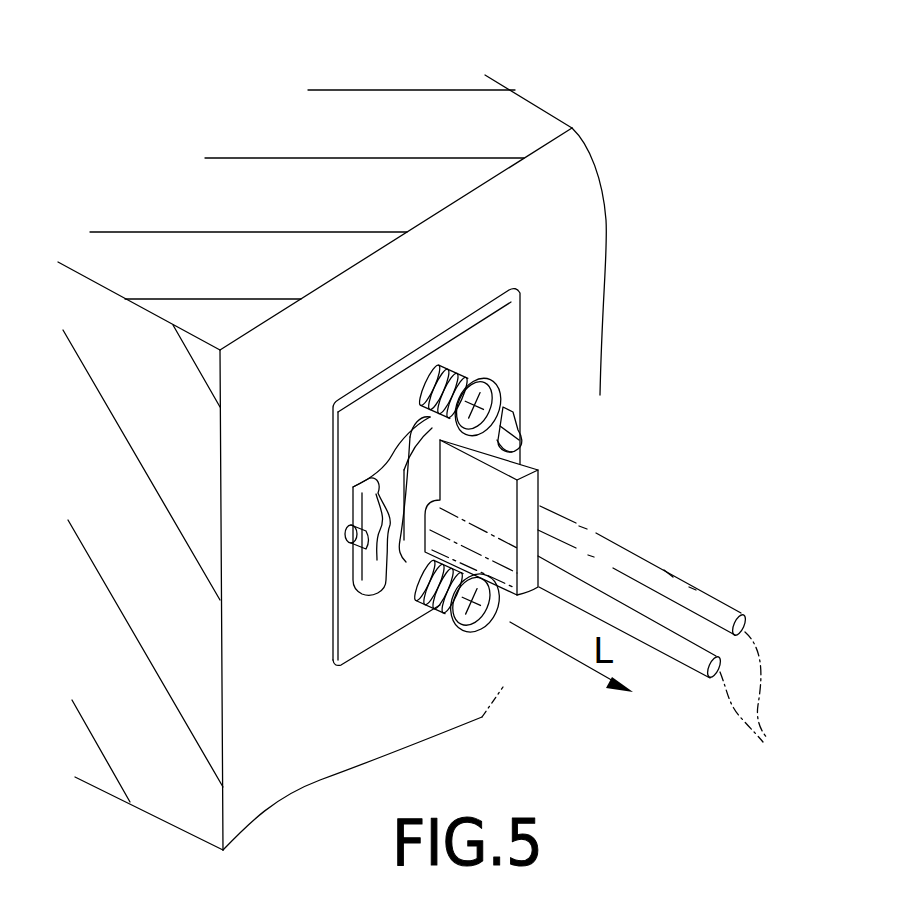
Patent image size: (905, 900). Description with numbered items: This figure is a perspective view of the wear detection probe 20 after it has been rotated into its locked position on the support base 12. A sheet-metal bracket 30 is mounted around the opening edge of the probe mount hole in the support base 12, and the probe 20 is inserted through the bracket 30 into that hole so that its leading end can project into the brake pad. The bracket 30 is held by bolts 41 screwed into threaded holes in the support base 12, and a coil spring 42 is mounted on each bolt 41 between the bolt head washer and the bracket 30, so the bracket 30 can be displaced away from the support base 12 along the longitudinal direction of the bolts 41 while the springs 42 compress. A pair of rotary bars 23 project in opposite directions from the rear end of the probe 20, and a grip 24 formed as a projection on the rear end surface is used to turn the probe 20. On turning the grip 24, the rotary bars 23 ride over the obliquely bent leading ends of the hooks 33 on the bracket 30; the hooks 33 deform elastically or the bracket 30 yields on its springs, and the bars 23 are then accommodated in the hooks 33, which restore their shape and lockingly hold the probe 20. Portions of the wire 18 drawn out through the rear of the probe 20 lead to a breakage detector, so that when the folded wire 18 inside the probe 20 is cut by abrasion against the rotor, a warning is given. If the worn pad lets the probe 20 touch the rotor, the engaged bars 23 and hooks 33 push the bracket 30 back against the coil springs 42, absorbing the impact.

The support base 12 is at (492, 132).
The bracket 30 is at (540, 283).
The wear detection probe 20 is at (575, 484).
The rotary bars 23 is at (390, 547).
The hooks 33 is at (400, 560).
The coil spring 42 is at (445, 368).
The bolts 41 is at (490, 381).
The grip 24 is at (539, 505).
The wire 18 is at (666, 653).